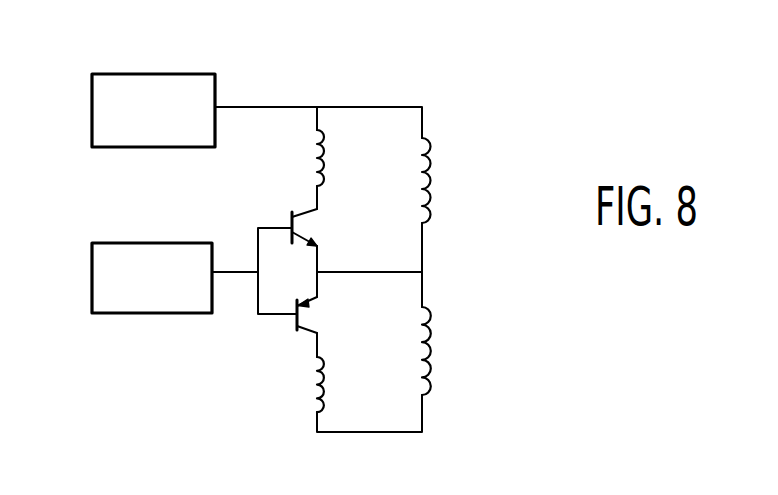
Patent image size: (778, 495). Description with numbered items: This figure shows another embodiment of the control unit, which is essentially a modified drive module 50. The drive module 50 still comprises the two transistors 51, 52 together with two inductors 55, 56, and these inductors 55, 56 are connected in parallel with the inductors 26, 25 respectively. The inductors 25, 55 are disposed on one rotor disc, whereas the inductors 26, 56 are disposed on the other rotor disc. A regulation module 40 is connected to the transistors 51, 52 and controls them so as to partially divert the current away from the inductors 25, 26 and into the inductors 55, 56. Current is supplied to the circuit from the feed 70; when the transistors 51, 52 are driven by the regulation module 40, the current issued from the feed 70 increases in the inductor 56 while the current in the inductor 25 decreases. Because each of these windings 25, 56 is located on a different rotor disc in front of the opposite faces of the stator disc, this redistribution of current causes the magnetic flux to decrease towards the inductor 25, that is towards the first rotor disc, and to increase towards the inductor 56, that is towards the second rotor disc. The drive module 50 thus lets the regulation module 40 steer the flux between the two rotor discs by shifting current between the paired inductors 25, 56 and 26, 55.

The drive module 50 is at (378, 78).
The feed 70 is at (127, 74).
The regulation module 40 is at (92, 293).
The inductor 56 is at (334, 177).
The inductor 55 is at (333, 378).
The inductor 25 is at (436, 180).
The inductor 26 is at (434, 372).
The transistor 51 is at (291, 212).
The transistor 52 is at (297, 326).